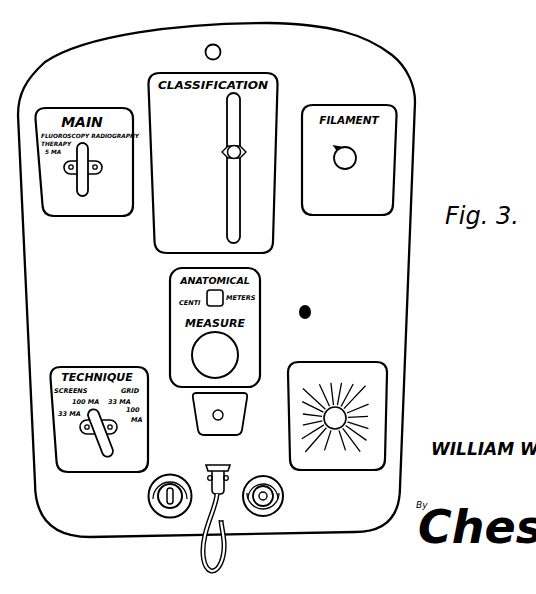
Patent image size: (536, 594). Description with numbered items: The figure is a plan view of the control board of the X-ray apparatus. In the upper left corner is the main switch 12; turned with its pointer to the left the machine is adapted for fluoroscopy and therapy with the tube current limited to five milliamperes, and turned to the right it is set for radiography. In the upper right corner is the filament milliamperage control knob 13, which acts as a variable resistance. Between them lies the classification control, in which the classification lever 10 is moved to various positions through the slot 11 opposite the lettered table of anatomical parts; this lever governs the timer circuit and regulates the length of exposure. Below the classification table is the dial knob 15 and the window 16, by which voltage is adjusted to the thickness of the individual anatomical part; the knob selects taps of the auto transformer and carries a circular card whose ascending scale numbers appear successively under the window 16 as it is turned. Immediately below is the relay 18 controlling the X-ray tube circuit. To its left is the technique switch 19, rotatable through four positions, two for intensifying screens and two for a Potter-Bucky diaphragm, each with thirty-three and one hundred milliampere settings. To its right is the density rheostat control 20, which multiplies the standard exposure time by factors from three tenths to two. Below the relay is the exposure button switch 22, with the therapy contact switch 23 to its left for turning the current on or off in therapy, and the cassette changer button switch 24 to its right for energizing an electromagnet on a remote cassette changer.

The classification lever 10 is at (236, 150).
The slot 11 is at (237, 228).
The main switch 12 is at (80, 196).
The filament milliamperage control knob 13 is at (350, 156).
The dial knob 15 is at (230, 352).
The window 16 is at (224, 303).
The relay 18 is at (222, 414).
The technique switch 19 is at (99, 438).
The rheostat control 20 is at (336, 417).
The exposure button switch 22 is at (225, 460).
The therapy contact switch 23 is at (148, 496).
The cassette changer button switch 24 is at (283, 498).